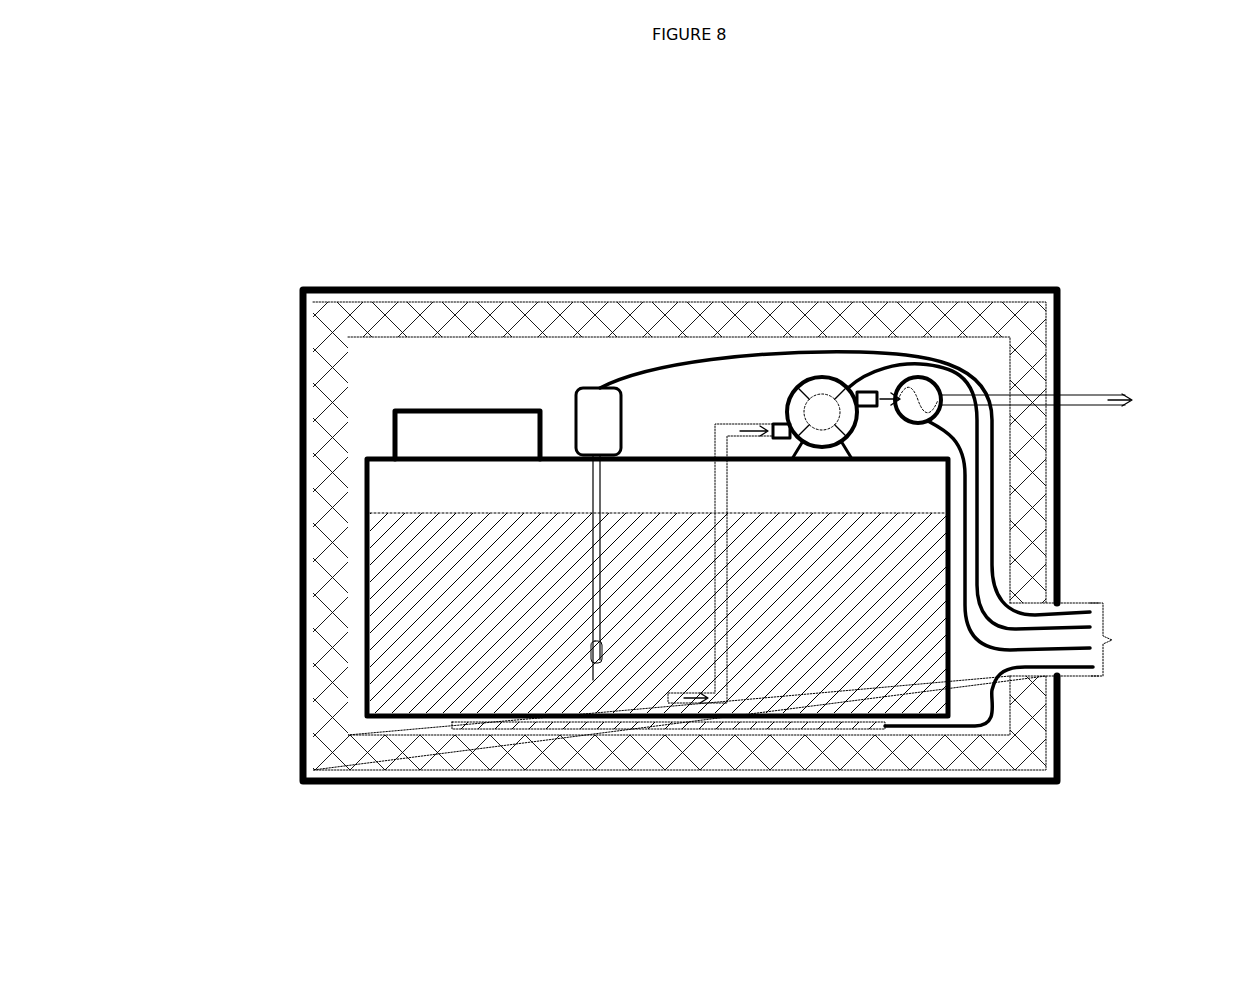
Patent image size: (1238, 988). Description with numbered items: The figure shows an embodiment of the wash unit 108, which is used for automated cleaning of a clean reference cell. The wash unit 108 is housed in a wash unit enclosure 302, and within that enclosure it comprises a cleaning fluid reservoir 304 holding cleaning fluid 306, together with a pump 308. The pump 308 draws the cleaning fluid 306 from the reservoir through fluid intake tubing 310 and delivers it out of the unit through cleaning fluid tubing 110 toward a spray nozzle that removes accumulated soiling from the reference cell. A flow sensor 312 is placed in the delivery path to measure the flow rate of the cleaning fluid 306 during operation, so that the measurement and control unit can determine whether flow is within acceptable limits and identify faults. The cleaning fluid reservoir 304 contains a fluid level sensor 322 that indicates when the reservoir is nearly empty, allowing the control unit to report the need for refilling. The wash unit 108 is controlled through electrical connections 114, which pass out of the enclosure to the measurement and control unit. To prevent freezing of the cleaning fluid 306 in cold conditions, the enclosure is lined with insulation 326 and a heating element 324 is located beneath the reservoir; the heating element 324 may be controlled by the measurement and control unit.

The wash unit 108 is at (428, 196).
The wash unit enclosure 302 is at (778, 288).
The cleaning fluid reservoir 304 is at (372, 456).
The cleaning fluid 306 is at (420, 602).
The pump 308 is at (822, 377).
The fluid intake tubing 310 is at (703, 702).
The flow sensor 312 is at (935, 378).
The cleaning fluid tubing 110 is at (1073, 392).
The electrical connections 114 is at (1106, 617).
The fluid level sensor 322 is at (583, 387).
The heating element 324 is at (631, 728).
The insulation 326 is at (352, 758).